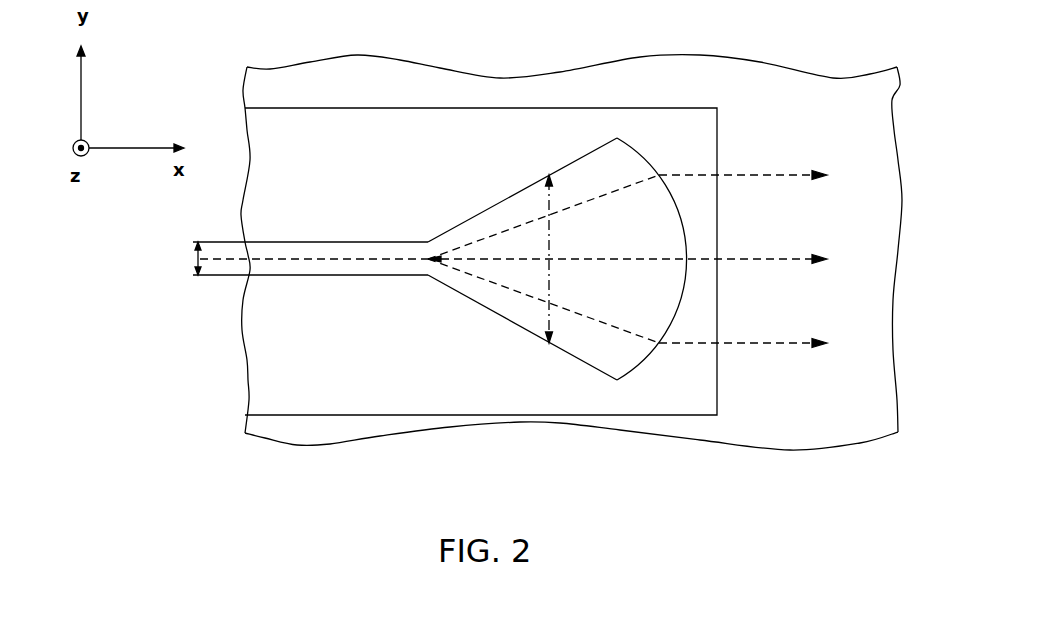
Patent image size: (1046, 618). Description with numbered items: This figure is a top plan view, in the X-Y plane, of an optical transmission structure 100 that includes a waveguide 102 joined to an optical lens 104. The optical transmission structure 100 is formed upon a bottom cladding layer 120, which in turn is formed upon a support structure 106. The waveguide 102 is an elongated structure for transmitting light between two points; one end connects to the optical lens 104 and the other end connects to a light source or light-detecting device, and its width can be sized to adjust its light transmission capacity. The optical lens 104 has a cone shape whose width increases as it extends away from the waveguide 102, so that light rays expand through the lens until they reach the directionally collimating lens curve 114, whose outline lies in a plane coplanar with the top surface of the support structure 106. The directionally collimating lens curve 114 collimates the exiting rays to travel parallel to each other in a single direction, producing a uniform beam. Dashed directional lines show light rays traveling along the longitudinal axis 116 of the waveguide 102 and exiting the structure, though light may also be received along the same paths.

The optical transmission structure 100 is at (520, 251).
The waveguide 102 is at (263, 277).
The optical lens 104 is at (497, 312).
The support structure 106 is at (851, 72).
The directionally collimating lens curve 114 is at (648, 155).
The longitudinal axis 116 is at (772, 258).
The bottom cladding layer 120 is at (483, 108).